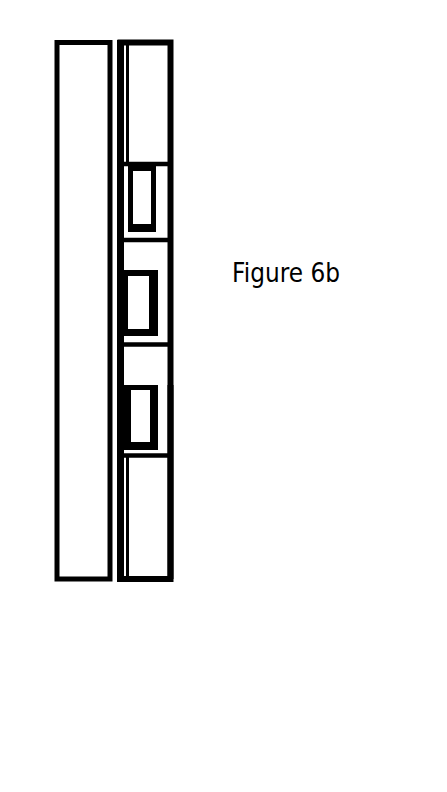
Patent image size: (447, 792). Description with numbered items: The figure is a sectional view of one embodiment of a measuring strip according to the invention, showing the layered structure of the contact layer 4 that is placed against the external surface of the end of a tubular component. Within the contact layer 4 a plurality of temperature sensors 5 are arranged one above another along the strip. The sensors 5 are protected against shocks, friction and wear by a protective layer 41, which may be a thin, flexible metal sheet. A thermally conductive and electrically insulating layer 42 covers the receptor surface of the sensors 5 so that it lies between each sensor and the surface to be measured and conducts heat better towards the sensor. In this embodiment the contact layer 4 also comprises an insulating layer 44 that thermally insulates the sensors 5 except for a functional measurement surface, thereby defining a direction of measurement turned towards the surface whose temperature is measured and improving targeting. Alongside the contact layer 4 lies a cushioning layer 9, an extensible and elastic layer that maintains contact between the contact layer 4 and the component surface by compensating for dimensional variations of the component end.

The contact layer 4 is at (128, 112).
The temperature sensors 5 is at (138, 317).
The cushioning layer 9 is at (75, 562).
The protective layer 41 is at (166, 434).
The thermally conductive and electrically insulating layer 42 is at (152, 495).
The insulating layer 44 is at (118, 562).